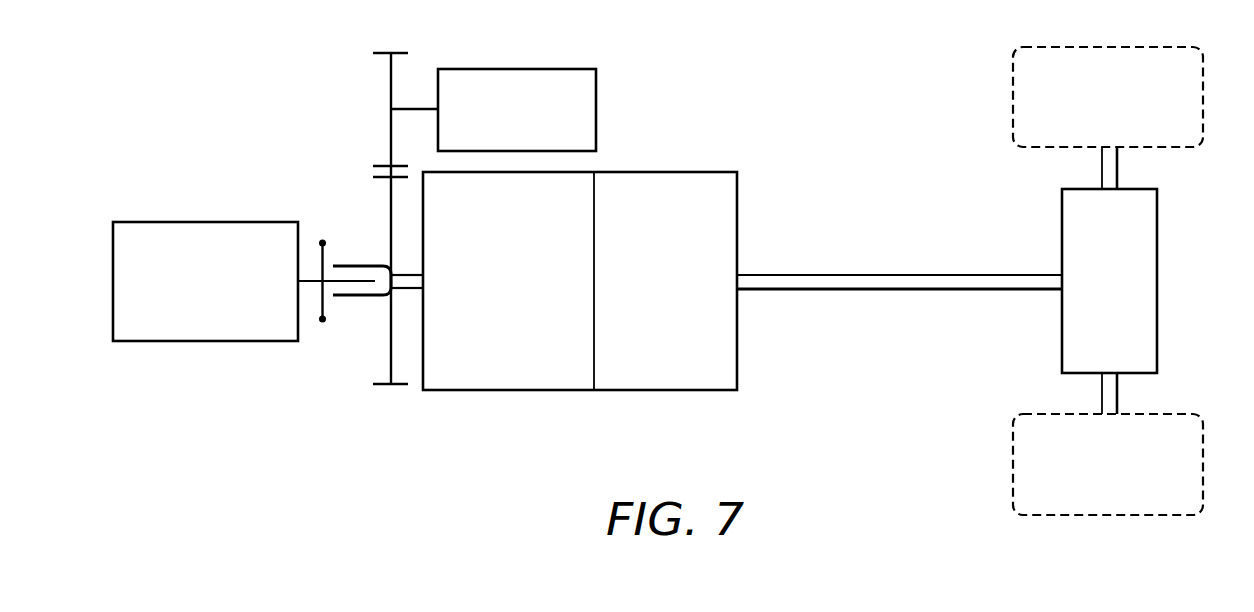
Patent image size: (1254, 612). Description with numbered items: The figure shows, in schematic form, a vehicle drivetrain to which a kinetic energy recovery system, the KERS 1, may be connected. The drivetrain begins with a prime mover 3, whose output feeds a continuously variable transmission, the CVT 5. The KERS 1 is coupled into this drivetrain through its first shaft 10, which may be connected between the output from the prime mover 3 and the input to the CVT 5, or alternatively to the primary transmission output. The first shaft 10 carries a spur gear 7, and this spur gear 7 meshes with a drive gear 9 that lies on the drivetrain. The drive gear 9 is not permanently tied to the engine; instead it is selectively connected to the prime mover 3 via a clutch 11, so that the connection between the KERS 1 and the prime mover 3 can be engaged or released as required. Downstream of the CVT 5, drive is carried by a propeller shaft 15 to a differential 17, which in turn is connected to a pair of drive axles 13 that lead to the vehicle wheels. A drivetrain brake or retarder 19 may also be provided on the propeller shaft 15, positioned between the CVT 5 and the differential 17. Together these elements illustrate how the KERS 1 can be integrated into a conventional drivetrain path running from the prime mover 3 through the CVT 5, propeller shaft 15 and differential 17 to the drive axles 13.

The KERS 1 is at (596, 80).
The prime mover 3 is at (204, 222).
The continuously variable transmission 5 is at (511, 392).
The spur gear 7 is at (391, 130).
The drive gear 9 is at (391, 347).
The first shaft 10 is at (413, 107).
The clutch 11 is at (356, 266).
The drive axles 13 is at (1118, 165).
The propeller shaft 15 is at (899, 274).
The differential 17 is at (1157, 276).
The drivetrain brake or retarder 19 is at (668, 392).